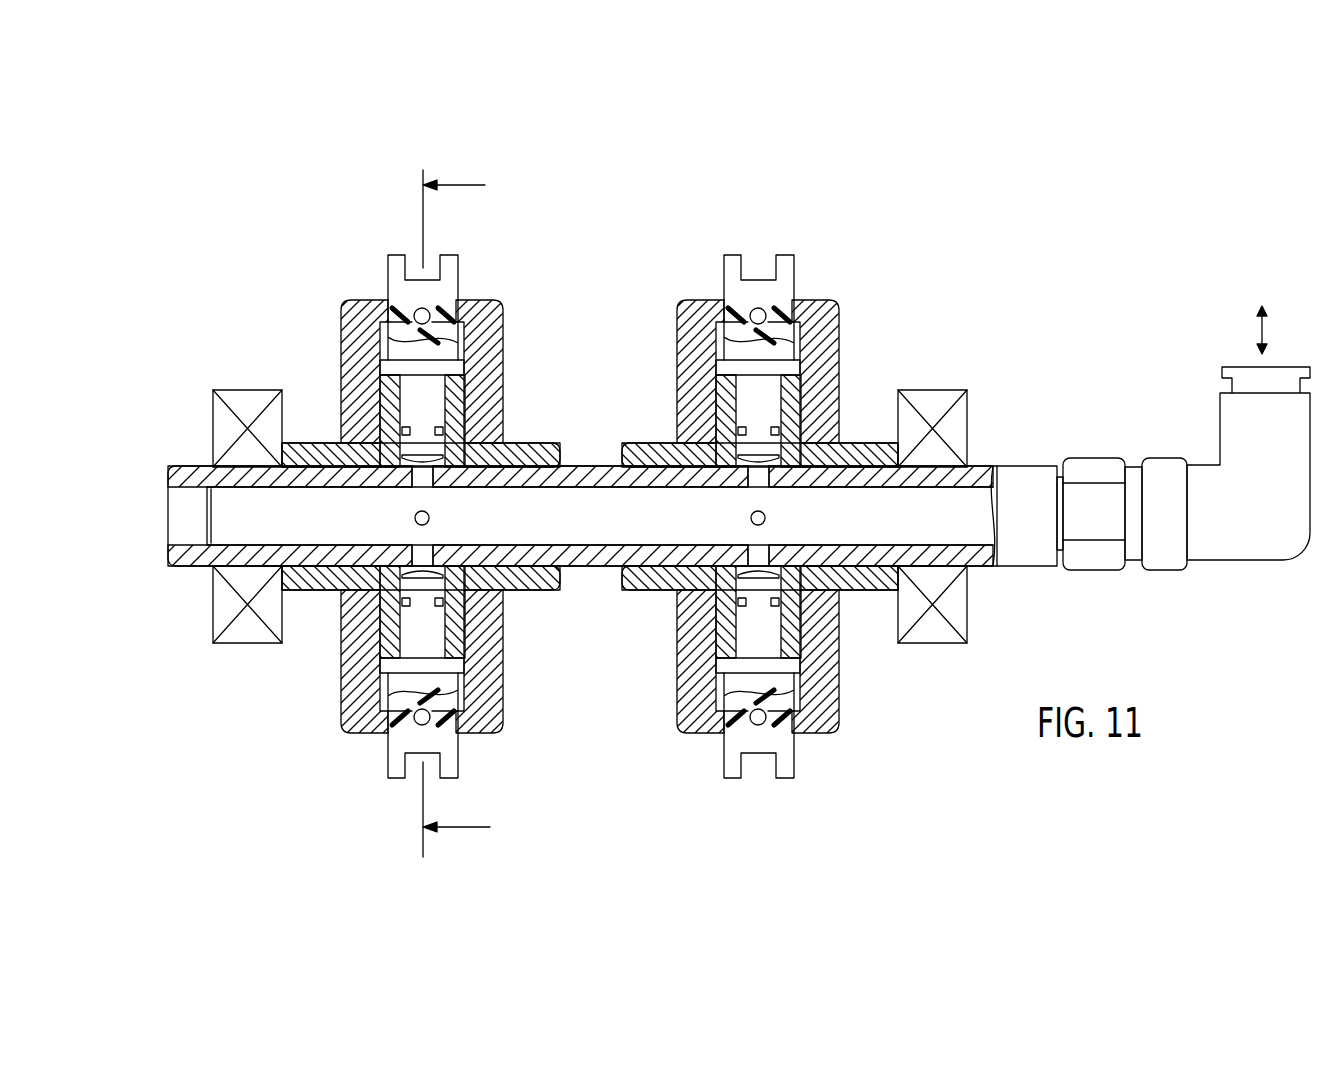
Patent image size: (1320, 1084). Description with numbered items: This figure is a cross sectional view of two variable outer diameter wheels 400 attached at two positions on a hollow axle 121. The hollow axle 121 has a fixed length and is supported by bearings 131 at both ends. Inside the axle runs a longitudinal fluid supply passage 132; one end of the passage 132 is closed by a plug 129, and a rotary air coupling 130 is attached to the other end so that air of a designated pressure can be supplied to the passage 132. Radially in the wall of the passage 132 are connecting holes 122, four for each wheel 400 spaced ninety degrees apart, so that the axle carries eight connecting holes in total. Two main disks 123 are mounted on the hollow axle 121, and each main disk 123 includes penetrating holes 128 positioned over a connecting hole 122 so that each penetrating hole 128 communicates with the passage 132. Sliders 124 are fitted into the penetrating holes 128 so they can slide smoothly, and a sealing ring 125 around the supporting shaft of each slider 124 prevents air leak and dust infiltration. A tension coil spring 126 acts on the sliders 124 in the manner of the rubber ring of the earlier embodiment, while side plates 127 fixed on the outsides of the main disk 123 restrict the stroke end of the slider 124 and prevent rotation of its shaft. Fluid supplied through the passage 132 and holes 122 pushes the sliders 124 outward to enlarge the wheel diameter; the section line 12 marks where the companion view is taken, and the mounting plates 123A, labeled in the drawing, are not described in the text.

The section line 12- 12 is at (428, 511).
The hollow axle 121 is at (1037, 480).
The connecting holes 122 is at (429, 518).
The main disk 123 is at (392, 623).
The mounting plate 123A is at (326, 455).
The slider 124 is at (780, 348).
The sealing ring 125 is at (444, 431).
The tension coil spring 126 is at (416, 310).
The side plate 127 is at (367, 312).
The penetrating hole 128 is at (445, 400).
The plug 129 is at (188, 537).
The rotary air coupling 130 is at (1255, 548).
The bearing 131 is at (250, 643).
The fluid supply passage 132 is at (967, 520).
The variable outer diameter wheel 400 is at (575, 257).